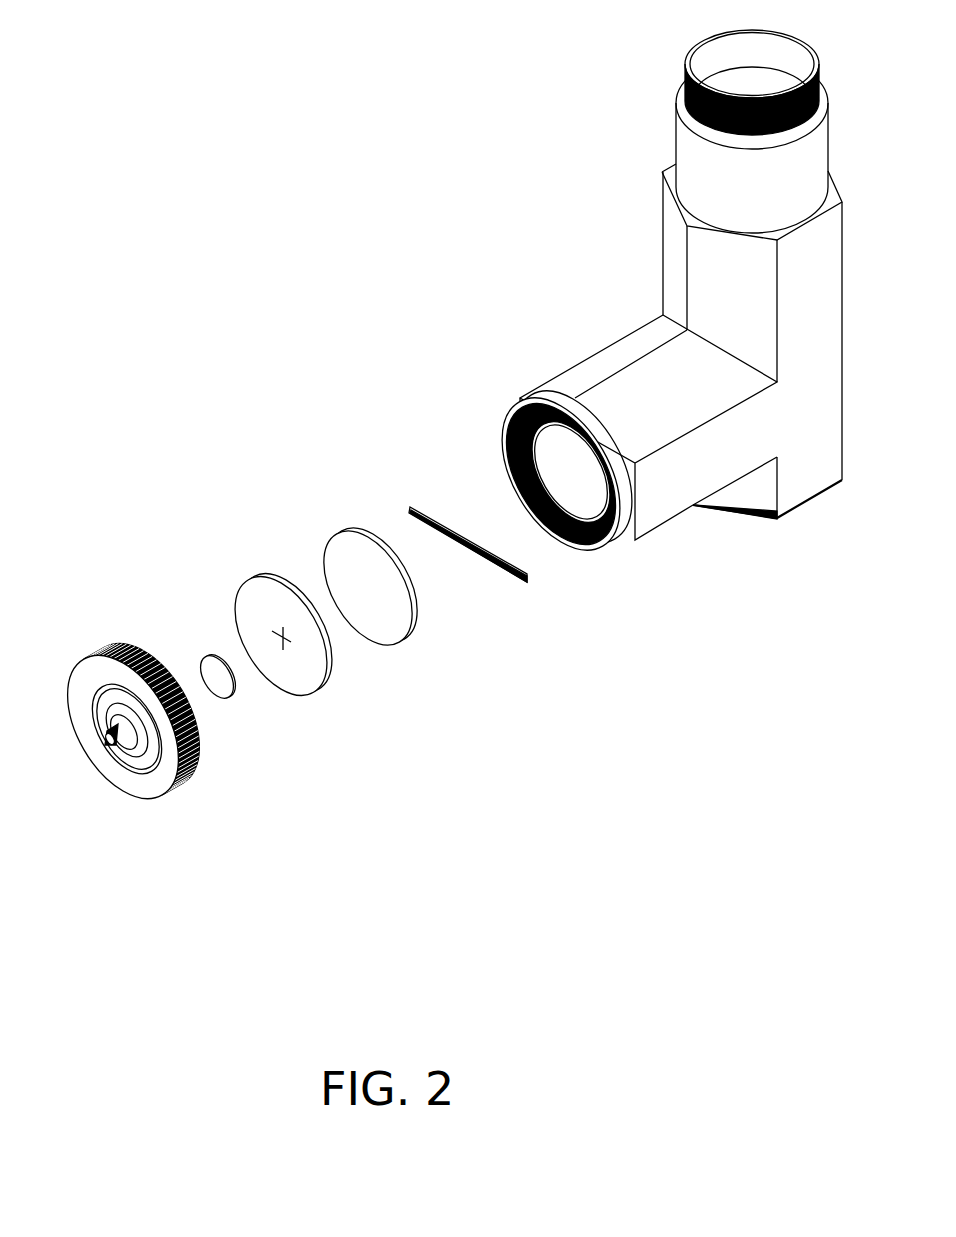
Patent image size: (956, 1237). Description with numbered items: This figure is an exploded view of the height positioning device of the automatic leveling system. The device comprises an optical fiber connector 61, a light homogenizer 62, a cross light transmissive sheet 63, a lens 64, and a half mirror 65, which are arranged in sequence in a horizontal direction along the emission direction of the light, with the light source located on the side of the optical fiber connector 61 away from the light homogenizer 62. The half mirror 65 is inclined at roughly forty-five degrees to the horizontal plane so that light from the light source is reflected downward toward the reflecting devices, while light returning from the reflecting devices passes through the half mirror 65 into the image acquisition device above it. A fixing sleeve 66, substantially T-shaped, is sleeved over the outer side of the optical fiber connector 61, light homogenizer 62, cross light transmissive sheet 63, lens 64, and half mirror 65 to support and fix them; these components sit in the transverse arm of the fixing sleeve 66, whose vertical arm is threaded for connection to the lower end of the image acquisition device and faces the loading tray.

The optical fiber connector 61 is at (93, 678).
The light homogenizer 62 is at (213, 665).
The cross light transmissive sheet 63 is at (270, 602).
The lens 64 is at (358, 563).
The half mirror 65 is at (422, 520).
The fixing sleeve 66 is at (628, 380).